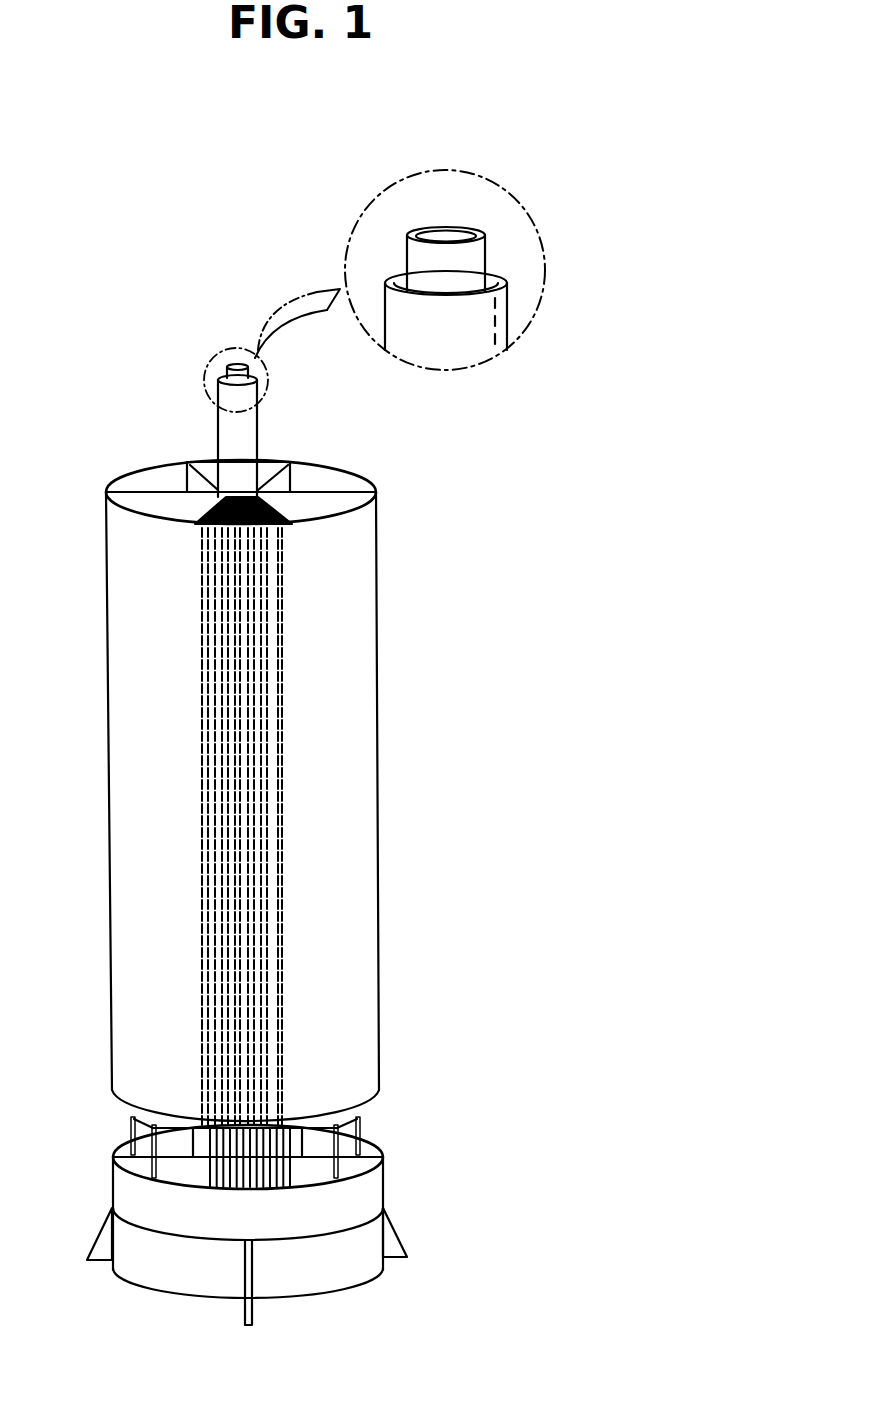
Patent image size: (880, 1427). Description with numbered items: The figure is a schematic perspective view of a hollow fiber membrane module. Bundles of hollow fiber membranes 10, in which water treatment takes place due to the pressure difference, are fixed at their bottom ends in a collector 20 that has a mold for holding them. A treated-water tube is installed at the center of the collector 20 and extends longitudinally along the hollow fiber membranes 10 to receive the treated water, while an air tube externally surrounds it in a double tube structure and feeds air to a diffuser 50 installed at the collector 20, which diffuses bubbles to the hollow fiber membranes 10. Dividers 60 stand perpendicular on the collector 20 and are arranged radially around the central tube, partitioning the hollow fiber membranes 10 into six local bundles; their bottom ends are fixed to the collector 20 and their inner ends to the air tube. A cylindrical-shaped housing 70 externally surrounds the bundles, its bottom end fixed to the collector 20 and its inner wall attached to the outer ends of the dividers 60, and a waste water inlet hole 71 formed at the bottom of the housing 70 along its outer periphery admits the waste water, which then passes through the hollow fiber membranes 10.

The hollow fiber membranes 10 is at (130, 510).
The collector 20 is at (350, 1270).
The diffuser 50 is at (358, 1163).
The dividers 60 is at (330, 505).
The housing 70 is at (362, 665).
The waste water inlet hole 71 is at (120, 1128).